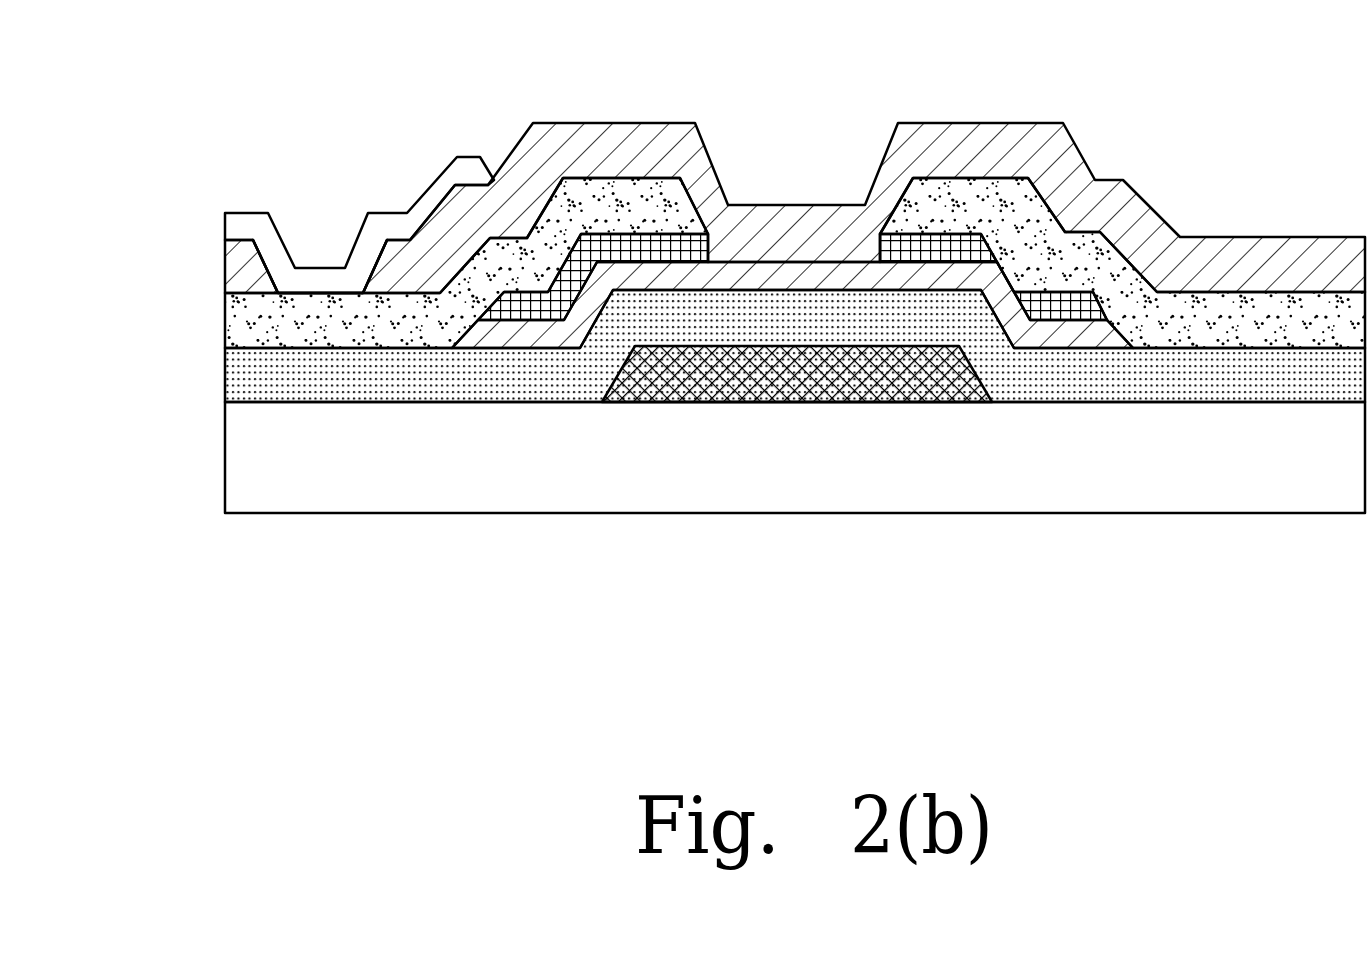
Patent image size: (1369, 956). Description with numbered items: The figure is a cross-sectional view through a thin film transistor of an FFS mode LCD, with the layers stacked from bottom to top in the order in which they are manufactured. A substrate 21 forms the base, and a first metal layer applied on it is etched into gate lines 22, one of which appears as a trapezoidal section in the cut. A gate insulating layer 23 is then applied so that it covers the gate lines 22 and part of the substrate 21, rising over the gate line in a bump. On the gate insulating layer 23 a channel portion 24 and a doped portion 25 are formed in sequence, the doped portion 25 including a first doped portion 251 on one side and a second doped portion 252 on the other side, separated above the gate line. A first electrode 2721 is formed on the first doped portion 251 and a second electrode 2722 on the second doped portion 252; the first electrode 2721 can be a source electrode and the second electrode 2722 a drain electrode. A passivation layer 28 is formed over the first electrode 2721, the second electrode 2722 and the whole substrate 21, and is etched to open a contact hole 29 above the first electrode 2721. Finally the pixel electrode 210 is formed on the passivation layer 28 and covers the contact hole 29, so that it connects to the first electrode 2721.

The substrate 21 is at (243, 437).
The gate line 22 is at (785, 390).
The gate insulating layer 23 is at (250, 375).
The channel portion 24 is at (1028, 345).
The doped portion 25 is at (857, 383).
The first doped portion 251 is at (527, 305).
The second doped portion 252 is at (1060, 315).
The first electrode 2721 is at (630, 190).
The second electrode 2722 is at (997, 187).
The passivation layer 28 is at (948, 145).
The contact hole 29 is at (323, 242).
The pixel electrode 210 is at (255, 225).